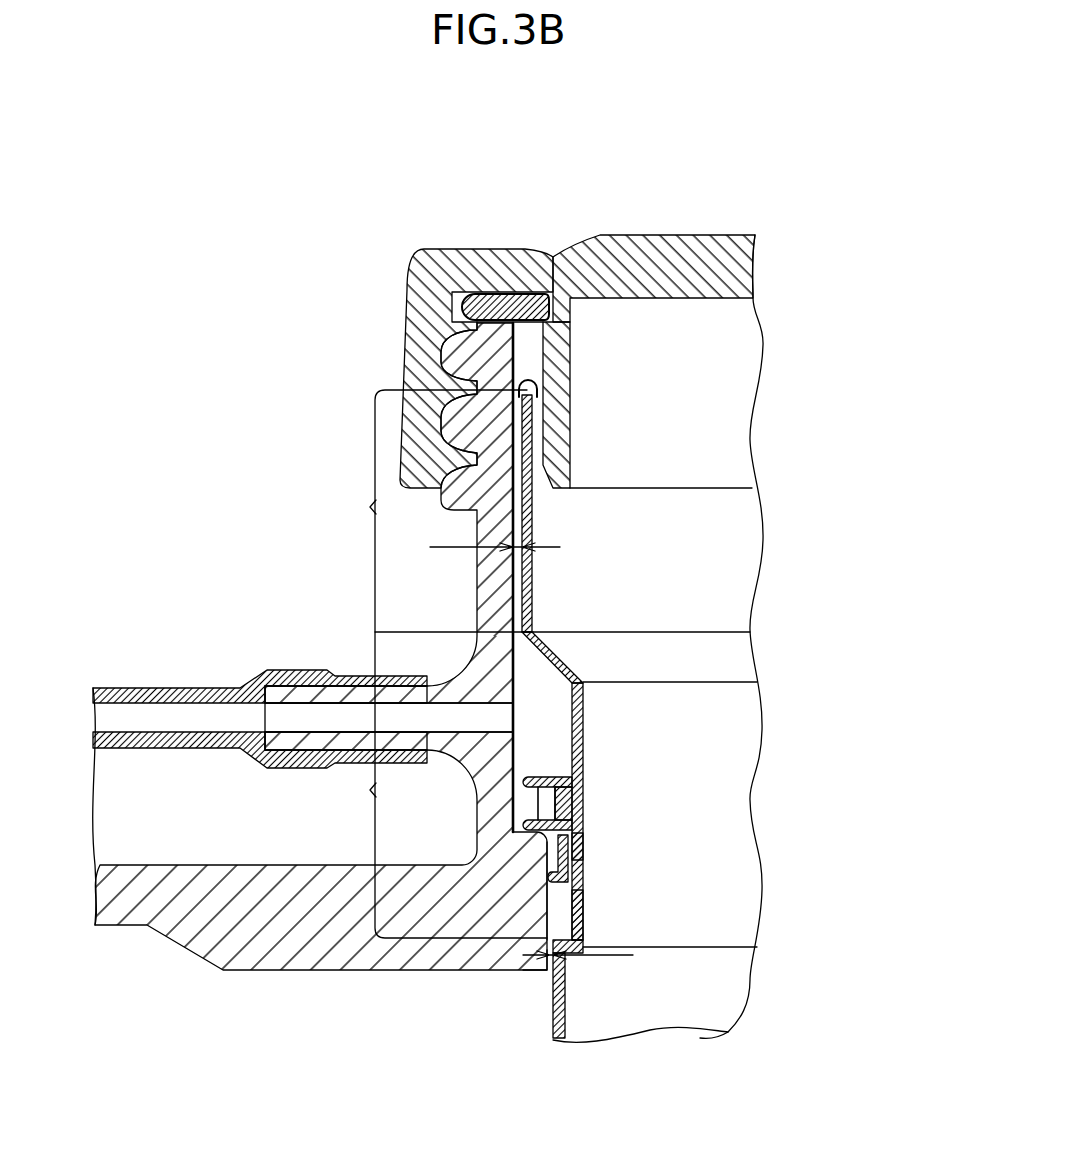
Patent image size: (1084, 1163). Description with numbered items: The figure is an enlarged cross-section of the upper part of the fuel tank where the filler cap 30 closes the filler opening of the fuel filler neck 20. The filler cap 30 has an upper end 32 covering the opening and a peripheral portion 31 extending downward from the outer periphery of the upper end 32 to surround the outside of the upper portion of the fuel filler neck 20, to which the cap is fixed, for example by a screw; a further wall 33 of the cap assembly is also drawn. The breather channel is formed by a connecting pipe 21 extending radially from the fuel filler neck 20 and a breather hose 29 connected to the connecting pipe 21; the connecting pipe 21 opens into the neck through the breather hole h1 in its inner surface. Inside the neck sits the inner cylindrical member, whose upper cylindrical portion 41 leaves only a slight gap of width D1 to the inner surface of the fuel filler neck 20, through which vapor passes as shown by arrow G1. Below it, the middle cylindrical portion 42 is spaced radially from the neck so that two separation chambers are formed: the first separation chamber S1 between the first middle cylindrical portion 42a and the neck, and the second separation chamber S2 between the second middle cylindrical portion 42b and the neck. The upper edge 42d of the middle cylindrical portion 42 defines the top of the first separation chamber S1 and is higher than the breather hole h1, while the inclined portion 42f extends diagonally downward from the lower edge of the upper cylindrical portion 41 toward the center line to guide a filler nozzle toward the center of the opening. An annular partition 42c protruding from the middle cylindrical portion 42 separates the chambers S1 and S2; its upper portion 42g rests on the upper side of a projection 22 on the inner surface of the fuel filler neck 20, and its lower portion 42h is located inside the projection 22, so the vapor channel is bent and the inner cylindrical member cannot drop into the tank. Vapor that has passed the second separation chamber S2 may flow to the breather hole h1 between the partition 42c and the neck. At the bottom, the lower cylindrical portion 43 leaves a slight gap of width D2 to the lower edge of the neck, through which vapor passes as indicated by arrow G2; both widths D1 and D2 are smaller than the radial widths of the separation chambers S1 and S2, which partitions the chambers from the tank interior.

The fuel filler neck 20 is at (493, 488).
The connecting pipe 21 is at (345, 688).
The projection 22 is at (553, 868).
The breather hose 29 is at (190, 688).
The filler cap 30 is at (741, 206).
The peripheral portion 31 is at (408, 303).
The upper end 32 is at (641, 262).
The inner wall 33 is at (571, 418).
The upper cylindrical portion 41 is at (431, 511).
The middle cylindrical portion 42 is at (441, 785).
The first middle cylindrical portion 42a is at (584, 712).
The second middle cylindrical portion 42b is at (585, 926).
The partition 42c is at (512, 833).
The upper edge 42d is at (534, 630).
The inclined portion 42f is at (562, 665).
The upper portion 42g is at (545, 805).
The lower portion 42h is at (573, 843).
The lower cylindrical portion 43 is at (566, 1000).
The arrow G1 is at (537, 393).
The arrow G2 is at (544, 987).
The width of the gap D1 is at (495, 534).
The width of the gap D2 is at (579, 971).
The first separation chamber S1 is at (555, 750).
The second separation chamber S2 is at (565, 900).
The breather hole h1 is at (515, 718).